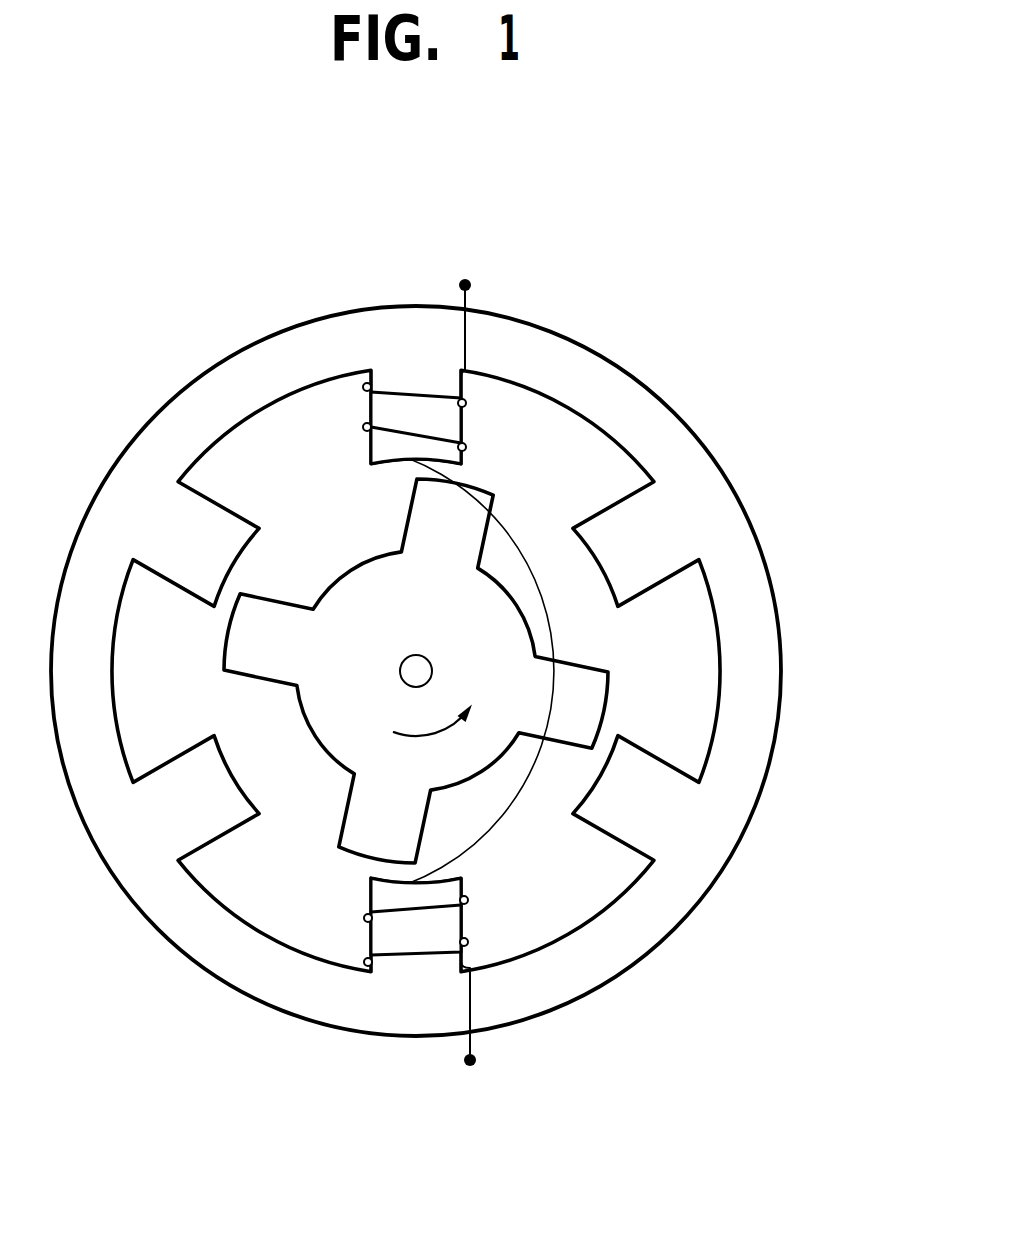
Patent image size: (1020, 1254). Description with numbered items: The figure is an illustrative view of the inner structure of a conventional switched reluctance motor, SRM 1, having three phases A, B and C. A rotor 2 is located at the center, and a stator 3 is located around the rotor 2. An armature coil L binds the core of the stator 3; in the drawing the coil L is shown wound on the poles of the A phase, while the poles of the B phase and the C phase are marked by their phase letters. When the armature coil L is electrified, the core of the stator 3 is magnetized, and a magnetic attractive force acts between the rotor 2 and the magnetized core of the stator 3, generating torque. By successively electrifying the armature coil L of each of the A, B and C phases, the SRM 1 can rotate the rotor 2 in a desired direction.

The switched reluctance motor 1 is at (752, 402).
The rotor 2 is at (588, 699).
The stator 3 is at (755, 633).
The A phase A is at (419, 672).
The B phase B is at (410, 673).
The C phase C is at (413, 670).
The armature coil L is at (418, 953).